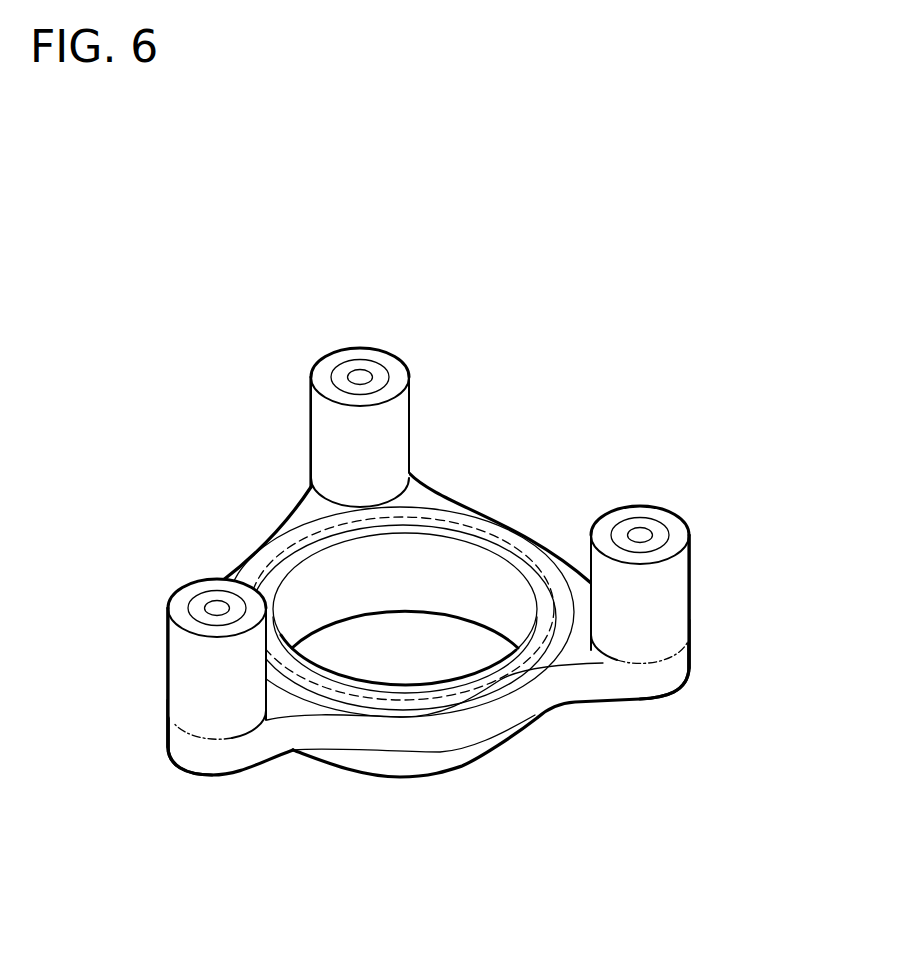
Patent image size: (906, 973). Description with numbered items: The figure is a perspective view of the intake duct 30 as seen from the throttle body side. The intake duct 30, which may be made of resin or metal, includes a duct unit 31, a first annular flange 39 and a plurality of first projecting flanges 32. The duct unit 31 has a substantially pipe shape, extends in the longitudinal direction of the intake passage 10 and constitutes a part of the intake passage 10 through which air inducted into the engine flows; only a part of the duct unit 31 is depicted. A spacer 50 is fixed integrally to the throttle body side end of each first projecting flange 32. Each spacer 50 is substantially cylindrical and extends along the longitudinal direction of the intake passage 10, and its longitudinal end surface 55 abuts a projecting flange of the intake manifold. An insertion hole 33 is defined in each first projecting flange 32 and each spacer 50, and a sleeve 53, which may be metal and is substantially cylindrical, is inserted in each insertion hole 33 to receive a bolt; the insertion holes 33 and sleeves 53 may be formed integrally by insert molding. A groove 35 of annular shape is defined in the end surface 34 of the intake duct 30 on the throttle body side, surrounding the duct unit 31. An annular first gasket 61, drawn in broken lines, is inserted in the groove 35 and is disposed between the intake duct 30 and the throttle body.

The intake passage 10 is at (453, 567).
The intake duct 30 is at (591, 368).
The duct unit 31 is at (362, 763).
The first projecting flange 32 is at (187, 747).
The insertion hole 33 is at (343, 371).
The end surface 34 is at (582, 597).
The groove 35 is at (483, 530).
The first annular flange 39 is at (458, 730).
The spacer 50 is at (326, 452).
The sleeve 53 is at (367, 366).
The end surface 55 is at (323, 364).
The first gasket 61 is at (473, 533).